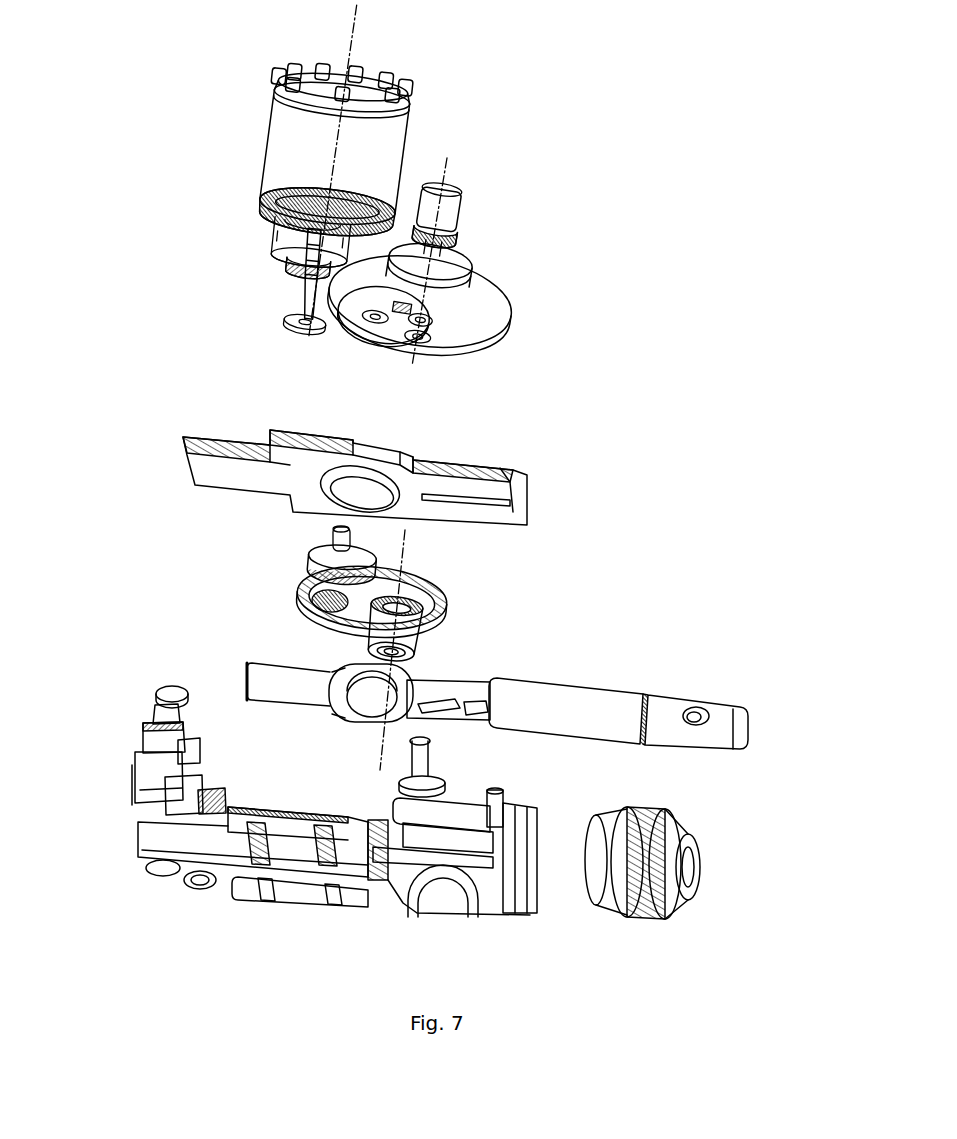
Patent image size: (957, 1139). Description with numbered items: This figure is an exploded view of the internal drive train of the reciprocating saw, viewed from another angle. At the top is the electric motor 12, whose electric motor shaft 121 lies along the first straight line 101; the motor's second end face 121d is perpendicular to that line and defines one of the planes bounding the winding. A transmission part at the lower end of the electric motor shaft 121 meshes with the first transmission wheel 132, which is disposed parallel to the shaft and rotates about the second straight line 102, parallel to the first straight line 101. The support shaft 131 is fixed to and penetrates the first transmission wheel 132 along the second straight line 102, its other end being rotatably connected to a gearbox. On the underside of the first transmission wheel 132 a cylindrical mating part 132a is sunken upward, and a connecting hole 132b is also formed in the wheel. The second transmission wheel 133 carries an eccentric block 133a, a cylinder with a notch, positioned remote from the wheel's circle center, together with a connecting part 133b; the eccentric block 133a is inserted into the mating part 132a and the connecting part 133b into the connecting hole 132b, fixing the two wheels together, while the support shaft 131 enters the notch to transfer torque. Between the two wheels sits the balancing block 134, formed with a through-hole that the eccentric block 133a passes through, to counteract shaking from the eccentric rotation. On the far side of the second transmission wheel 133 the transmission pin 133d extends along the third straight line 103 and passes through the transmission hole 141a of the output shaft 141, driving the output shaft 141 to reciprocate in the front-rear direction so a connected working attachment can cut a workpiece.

The first straight line 101 is at (348, 33).
The electric motor 12 is at (278, 147).
The electric motor shaft 121 is at (278, 265).
The second end face 121d is at (292, 310).
The second straight line 102 is at (447, 163).
The first transmission wheel 132 is at (512, 305).
The mating part 132a is at (310, 322).
The connecting hole 132b is at (435, 356).
The support shaft 131 is at (387, 338).
The balancing block 134 is at (190, 440).
The third straight line 103 is at (405, 550).
The second transmission wheel 133 is at (440, 600).
The connecting part 133b is at (333, 537).
The eccentric block 133a is at (317, 574).
The transmission pin 133d is at (420, 648).
The output shaft 141 is at (735, 718).
The transmission hole 141a is at (333, 702).